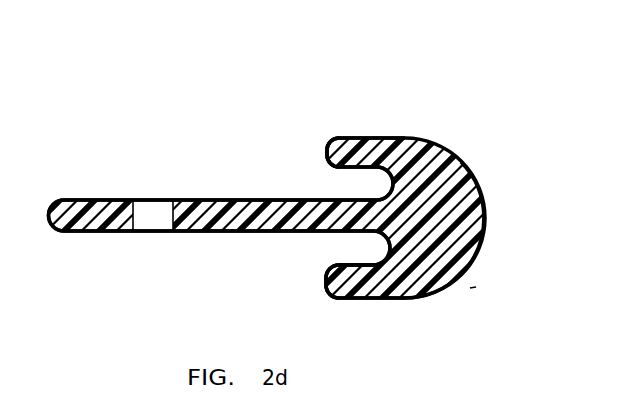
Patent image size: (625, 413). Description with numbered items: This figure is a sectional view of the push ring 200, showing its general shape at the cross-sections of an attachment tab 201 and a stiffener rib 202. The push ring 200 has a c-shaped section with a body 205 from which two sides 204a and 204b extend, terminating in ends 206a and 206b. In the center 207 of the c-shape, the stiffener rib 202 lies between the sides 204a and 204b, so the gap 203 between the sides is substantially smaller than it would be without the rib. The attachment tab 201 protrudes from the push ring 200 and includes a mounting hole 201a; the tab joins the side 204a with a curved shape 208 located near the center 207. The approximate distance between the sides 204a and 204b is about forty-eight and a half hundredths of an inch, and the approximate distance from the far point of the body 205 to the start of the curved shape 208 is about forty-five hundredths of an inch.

The push ring 200 is at (415, 67).
The attachment tab 201 is at (60, 206).
The mounting hole 201a is at (151, 210).
The stiffener rib 202 is at (433, 249).
The gap 203 is at (375, 258).
The side 204a is at (383, 147).
The side 204b is at (383, 287).
The body 205 is at (469, 205).
The end 206a is at (327, 144).
The end 206b is at (326, 283).
The center 207 is at (413, 208).
The curved shape 208 is at (384, 240).